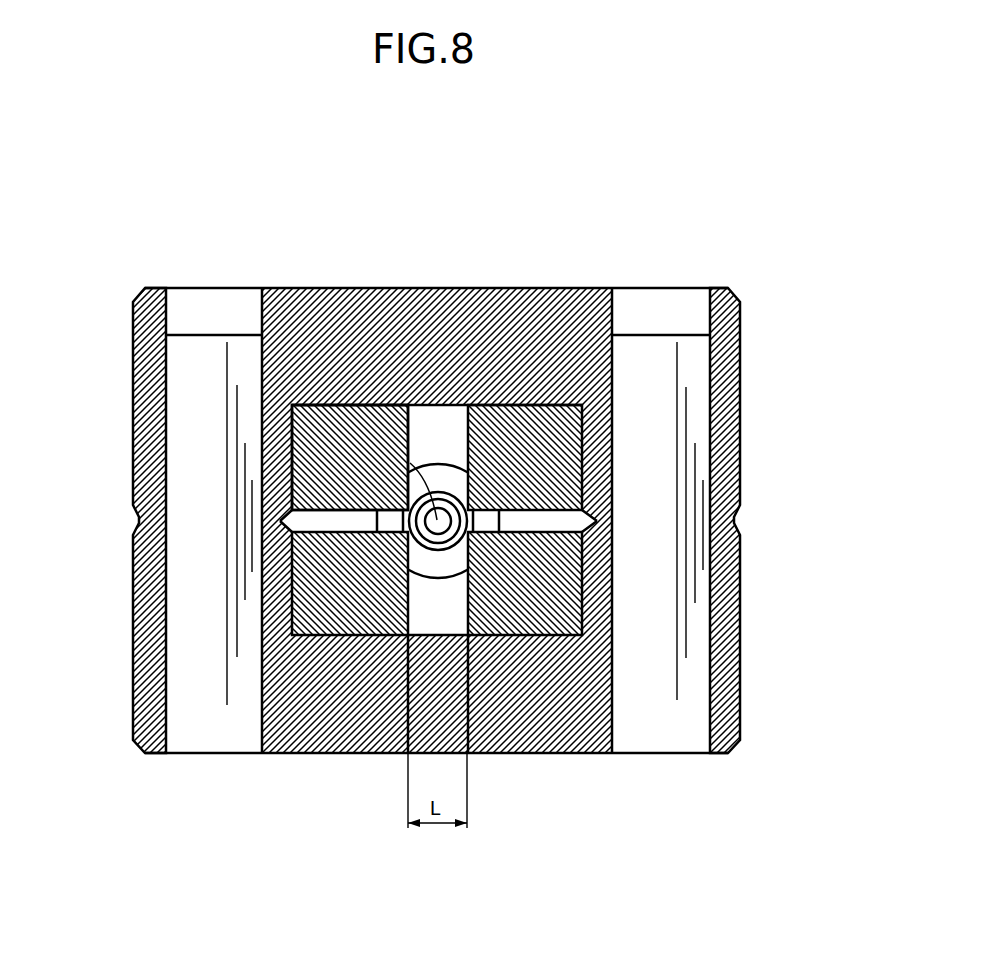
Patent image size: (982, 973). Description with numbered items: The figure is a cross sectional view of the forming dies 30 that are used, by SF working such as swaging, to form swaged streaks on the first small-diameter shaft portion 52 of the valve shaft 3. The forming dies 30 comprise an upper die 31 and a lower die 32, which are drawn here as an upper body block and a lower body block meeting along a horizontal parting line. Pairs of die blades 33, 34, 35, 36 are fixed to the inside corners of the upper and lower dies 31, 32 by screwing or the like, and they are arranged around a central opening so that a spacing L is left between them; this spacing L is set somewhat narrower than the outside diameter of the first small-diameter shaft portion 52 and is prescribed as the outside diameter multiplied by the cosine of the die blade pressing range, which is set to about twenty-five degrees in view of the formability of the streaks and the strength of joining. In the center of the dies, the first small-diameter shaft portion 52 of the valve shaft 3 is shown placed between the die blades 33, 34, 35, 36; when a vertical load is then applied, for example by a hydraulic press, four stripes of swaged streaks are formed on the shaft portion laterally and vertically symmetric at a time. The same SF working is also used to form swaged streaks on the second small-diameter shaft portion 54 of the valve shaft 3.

The valve shaft 3 is at (438, 461).
The forming dies 30 is at (388, 241).
The upper die 31 is at (437, 326).
The lower die 32 is at (553, 733).
The die blade 33 is at (333, 450).
The die blade 34 is at (533, 467).
The die blade 35 is at (320, 590).
The die blade 36 is at (563, 628).
The first small-diameter shaft portion 52 is at (478, 561).
The second small-diameter shaft portion 54 is at (390, 447).